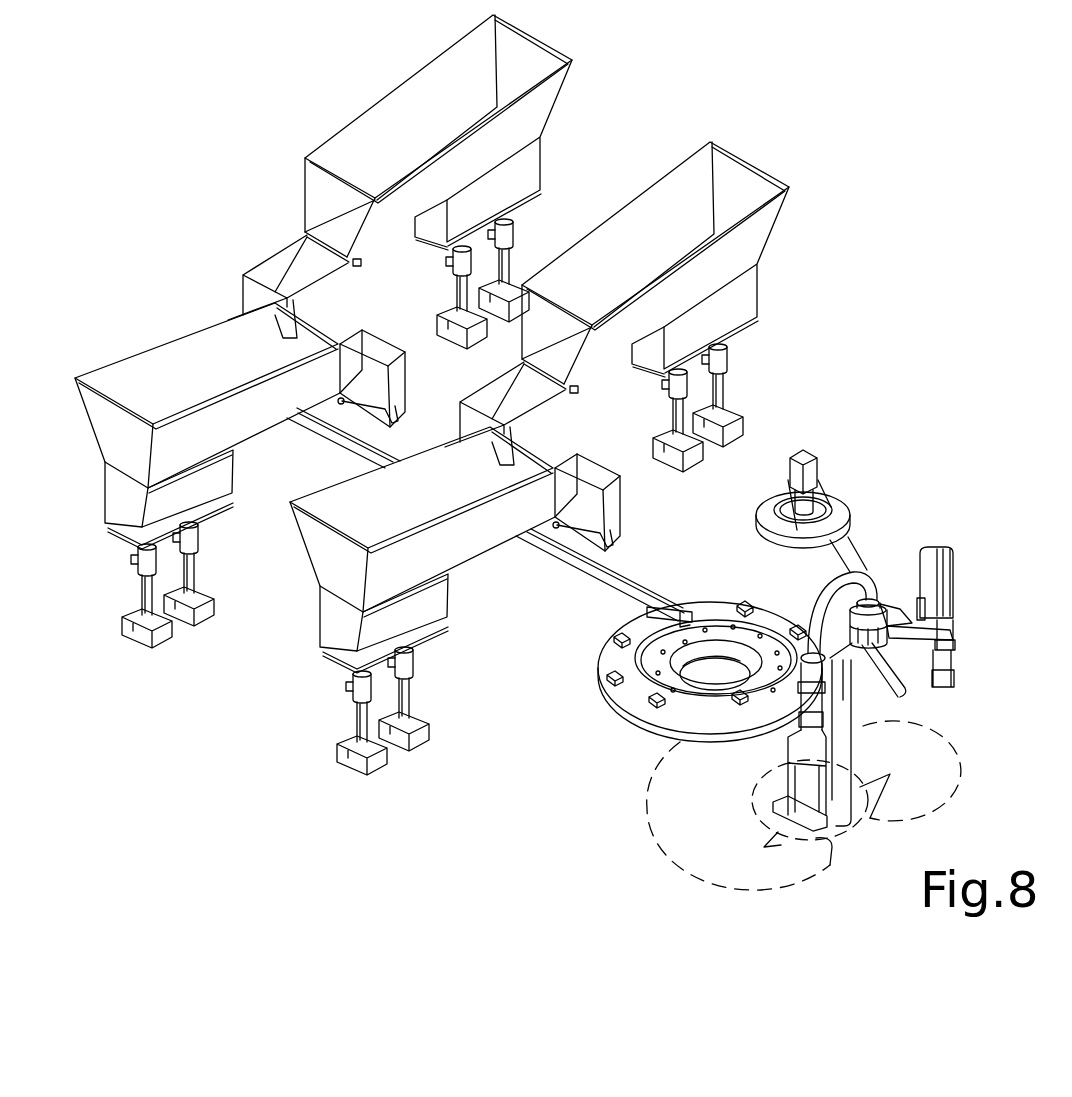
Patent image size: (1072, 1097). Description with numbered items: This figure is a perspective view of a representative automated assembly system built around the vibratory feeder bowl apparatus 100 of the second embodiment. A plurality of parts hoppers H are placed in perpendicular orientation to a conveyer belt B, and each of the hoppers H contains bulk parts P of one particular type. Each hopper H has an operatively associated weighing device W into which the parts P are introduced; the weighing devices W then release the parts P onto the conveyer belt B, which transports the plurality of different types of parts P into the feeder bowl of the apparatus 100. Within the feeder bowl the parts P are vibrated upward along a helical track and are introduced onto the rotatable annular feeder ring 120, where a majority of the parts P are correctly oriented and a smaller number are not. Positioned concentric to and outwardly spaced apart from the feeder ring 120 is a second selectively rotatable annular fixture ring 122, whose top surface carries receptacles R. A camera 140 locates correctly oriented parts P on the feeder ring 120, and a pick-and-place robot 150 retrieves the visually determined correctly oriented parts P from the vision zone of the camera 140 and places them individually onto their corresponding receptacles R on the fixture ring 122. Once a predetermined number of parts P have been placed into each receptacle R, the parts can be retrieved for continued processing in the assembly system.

The parts hopper H is at (433, 133).
The weighing device W is at (262, 262).
The conveyer belt B is at (625, 580).
The parts P is at (743, 604).
The receptacle R is at (754, 608).
The annular feeder ring 120 is at (615, 707).
The annular fixture ring 122 is at (613, 655).
The camera 140 is at (848, 520).
The pick-and-place robot 150 is at (953, 586).
The vibratory feeder bowl apparatus 100 is at (979, 697).